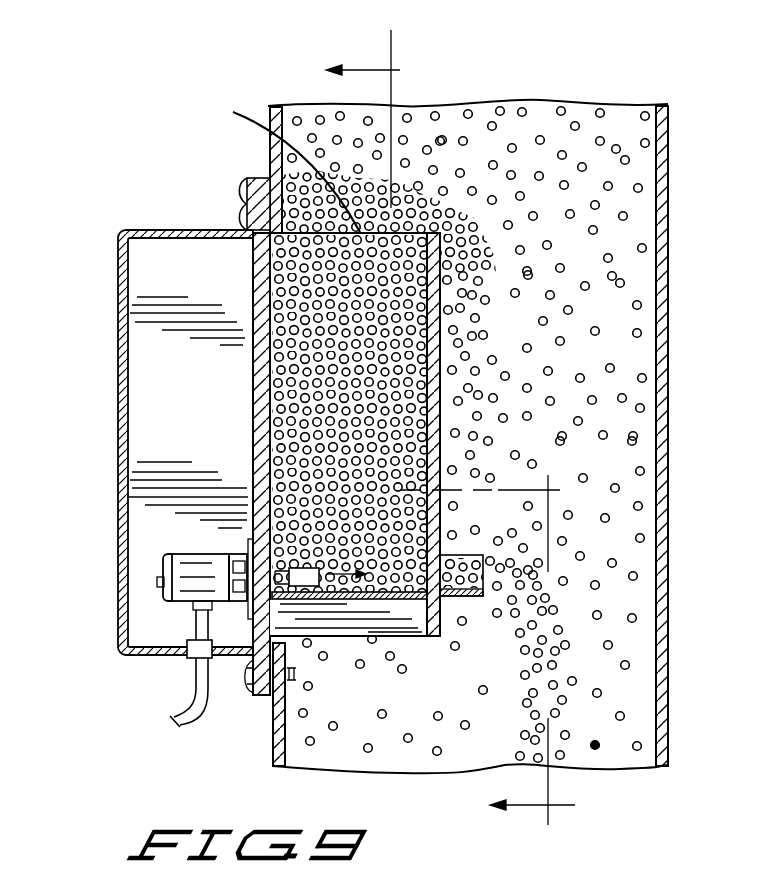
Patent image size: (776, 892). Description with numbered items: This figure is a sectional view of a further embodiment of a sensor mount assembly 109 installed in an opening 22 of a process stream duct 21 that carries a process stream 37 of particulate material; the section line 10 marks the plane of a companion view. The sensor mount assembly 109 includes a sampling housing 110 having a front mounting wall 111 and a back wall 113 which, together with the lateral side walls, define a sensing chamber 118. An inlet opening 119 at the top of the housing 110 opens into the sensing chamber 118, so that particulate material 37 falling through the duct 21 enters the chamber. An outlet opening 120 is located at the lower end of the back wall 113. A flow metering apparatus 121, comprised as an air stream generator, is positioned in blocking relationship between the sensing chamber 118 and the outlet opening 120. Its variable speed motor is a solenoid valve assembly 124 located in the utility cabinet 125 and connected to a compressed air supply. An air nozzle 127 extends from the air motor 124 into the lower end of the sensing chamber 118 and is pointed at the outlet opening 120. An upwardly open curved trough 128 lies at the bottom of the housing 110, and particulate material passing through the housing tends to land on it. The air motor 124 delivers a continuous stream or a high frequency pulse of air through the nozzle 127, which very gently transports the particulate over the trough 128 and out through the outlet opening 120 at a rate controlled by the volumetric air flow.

The section line 10- 10 is at (623, 817).
The process stream duct 21 is at (454, 408).
The opening 22 is at (268, 227).
The process stream 37 is at (630, 214).
The sensor mount assembly 109 is at (155, 496).
The sampling housing 110 is at (246, 428).
The front mounting wall 111 is at (253, 374).
The back wall 113 is at (442, 352).
The sensing chamber 118 is at (362, 468).
The inlet opening 119 is at (274, 163).
The outlet opening 120 is at (480, 506).
The flow metering apparatus 121 is at (239, 628).
The solenoid valve assembly 124 is at (172, 570).
The utility cabinet 125 is at (118, 418).
The air nozzle 127 is at (298, 585).
The curved trough 128 is at (392, 599).